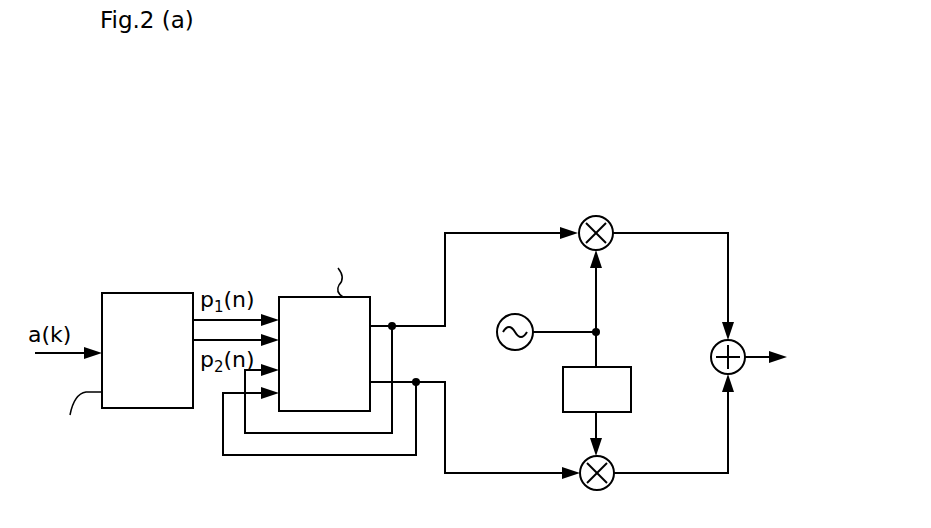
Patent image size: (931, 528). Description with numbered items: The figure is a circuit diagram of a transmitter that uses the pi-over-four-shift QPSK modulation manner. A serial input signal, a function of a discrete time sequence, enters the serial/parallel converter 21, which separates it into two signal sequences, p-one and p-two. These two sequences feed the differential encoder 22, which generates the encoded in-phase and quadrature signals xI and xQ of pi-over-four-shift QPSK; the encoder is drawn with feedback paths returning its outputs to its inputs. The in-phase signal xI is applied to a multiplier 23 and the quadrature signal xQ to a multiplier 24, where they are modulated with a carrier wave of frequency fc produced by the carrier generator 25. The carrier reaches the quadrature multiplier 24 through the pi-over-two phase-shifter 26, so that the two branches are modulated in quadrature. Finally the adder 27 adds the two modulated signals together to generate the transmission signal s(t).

The serial/parallel converter 21 is at (107, 367).
The differential encoder 22 is at (401, 341).
The multiplier (in-phase) 23 is at (581, 223).
The multiplier 24 is at (579, 463).
The carrier generator 25 is at (536, 308).
The π/2 phase-shifter 26 is at (594, 399).
The adder 27 is at (717, 353).